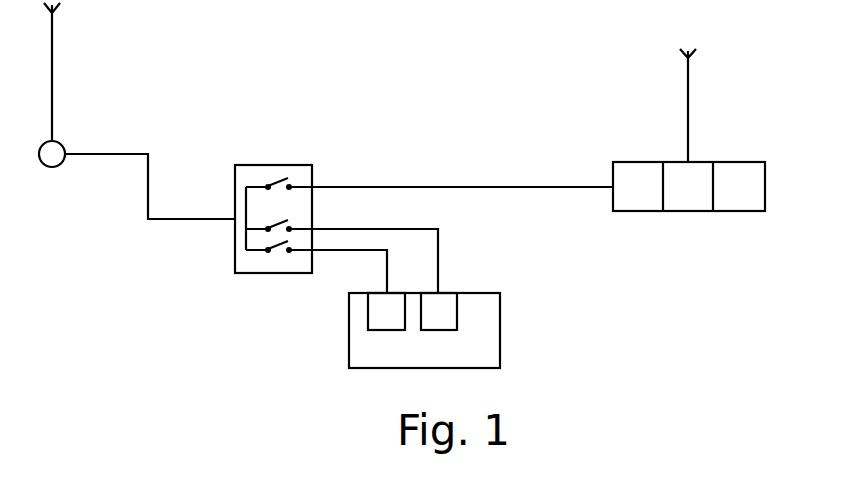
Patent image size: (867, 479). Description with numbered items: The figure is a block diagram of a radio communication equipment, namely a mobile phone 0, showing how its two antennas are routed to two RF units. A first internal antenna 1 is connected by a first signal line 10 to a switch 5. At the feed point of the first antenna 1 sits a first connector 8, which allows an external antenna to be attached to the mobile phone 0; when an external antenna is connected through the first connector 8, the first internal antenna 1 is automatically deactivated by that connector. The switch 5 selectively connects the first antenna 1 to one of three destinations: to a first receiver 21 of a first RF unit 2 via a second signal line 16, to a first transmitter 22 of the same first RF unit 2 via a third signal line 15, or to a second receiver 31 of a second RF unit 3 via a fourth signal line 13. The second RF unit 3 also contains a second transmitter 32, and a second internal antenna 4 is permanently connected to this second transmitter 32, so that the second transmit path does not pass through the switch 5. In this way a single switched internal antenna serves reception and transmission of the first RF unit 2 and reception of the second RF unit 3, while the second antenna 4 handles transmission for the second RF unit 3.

The mobile phone 0 is at (676, 376).
The first internal antenna 1 is at (58, 47).
The first RF unit 2 is at (446, 330).
The second RF unit 3 is at (711, 186).
The second internal antenna 4 is at (690, 82).
The switch 5 is at (275, 165).
The first connector 8 is at (50, 168).
The first signal line 10 is at (123, 153).
The fourth signal line 13 is at (428, 186).
The third signal line 15 is at (440, 263).
The second signal line 16 is at (385, 265).
The first receiver 21 is at (398, 322).
The first transmitter 22 is at (451, 322).
The second receiver 31 is at (650, 199).
The second transmitter 32 is at (700, 199).